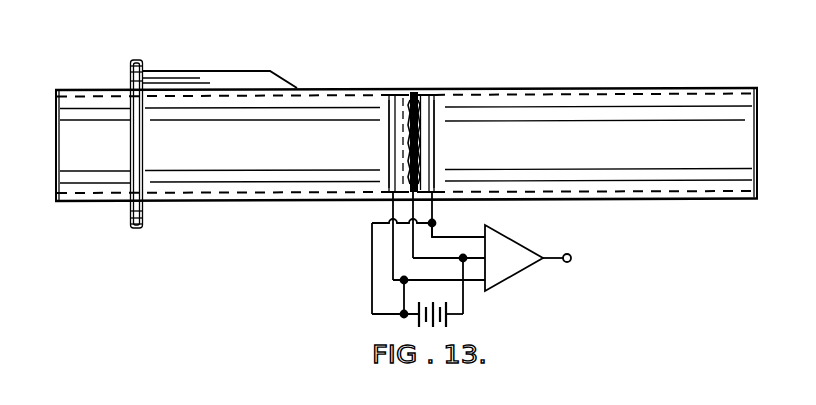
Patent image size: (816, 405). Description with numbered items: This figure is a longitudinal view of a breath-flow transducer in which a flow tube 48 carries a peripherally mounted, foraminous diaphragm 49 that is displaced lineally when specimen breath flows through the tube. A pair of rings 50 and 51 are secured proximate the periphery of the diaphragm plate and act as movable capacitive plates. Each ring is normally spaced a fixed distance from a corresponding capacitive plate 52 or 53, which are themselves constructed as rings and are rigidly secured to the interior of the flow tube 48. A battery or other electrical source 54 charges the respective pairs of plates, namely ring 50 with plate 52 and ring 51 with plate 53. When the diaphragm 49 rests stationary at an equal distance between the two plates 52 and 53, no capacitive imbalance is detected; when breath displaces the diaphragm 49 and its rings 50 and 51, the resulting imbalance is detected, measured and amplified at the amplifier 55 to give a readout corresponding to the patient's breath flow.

The flow tube 48 is at (655, 88).
The diaphragm 49 is at (413, 93).
The ring 50 is at (388, 96).
The ring 51 is at (429, 96).
The capacitive plate 52 is at (390, 152).
The capacitive plate 53 is at (434, 165).
The battery 54 is at (444, 322).
The amplifier 55 is at (520, 244).